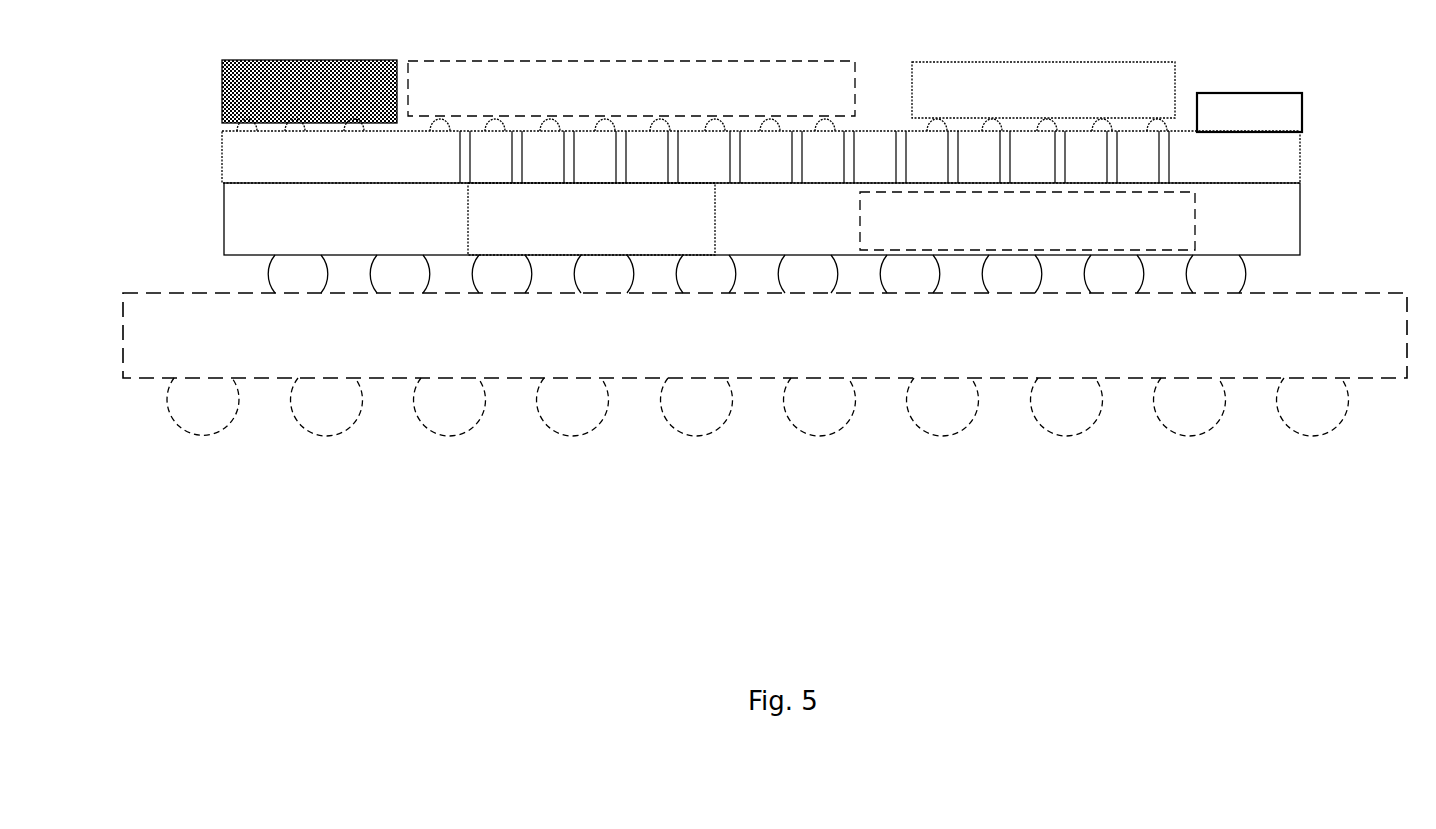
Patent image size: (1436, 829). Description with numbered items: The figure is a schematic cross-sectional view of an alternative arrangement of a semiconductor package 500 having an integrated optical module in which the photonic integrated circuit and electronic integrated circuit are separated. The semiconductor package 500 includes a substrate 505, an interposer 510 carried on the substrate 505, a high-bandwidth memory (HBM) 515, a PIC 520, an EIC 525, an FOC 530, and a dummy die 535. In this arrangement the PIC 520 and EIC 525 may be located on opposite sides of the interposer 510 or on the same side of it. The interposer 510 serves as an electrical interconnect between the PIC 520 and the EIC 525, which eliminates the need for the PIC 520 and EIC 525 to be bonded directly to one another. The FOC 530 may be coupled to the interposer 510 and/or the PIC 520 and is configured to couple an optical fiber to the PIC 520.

The semiconductor package 500 is at (1267, 680).
The substrate 505 is at (765, 364).
The interposer 510 is at (215, 134).
The high-bandwidth memory (HBM) 515 is at (591, 219).
The PIC 520 is at (1043, 90).
The EIC 525 is at (801, 155).
The FOC 530 is at (1249, 112).
The dummy die 535 is at (309, 91).